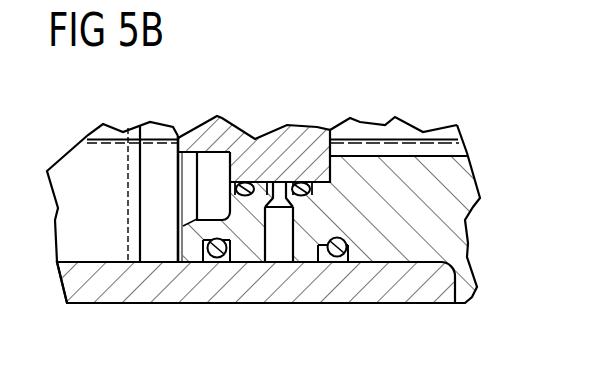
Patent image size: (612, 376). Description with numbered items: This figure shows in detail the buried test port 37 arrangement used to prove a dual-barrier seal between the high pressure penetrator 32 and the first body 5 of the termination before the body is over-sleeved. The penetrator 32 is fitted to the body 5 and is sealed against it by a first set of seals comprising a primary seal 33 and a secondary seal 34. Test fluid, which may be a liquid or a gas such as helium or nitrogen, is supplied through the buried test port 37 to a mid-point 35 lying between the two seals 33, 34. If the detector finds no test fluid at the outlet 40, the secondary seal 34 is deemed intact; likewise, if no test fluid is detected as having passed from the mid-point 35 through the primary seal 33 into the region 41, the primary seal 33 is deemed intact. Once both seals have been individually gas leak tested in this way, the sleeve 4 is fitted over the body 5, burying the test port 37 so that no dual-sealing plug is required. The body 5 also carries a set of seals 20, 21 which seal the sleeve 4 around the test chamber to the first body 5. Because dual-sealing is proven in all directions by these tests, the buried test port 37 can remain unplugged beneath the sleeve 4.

The sleeve 4 is at (417, 283).
The first body 5 is at (457, 240).
The seal 20 is at (342, 258).
The seal 21 is at (219, 258).
The high pressure penetrator 32 is at (258, 120).
The primary seal 33 is at (239, 166).
The secondary seal 34 is at (307, 166).
The mid-point 35 is at (281, 173).
The buried test port 37 is at (284, 250).
The outlet 40 is at (455, 148).
The region 41 is at (160, 180).